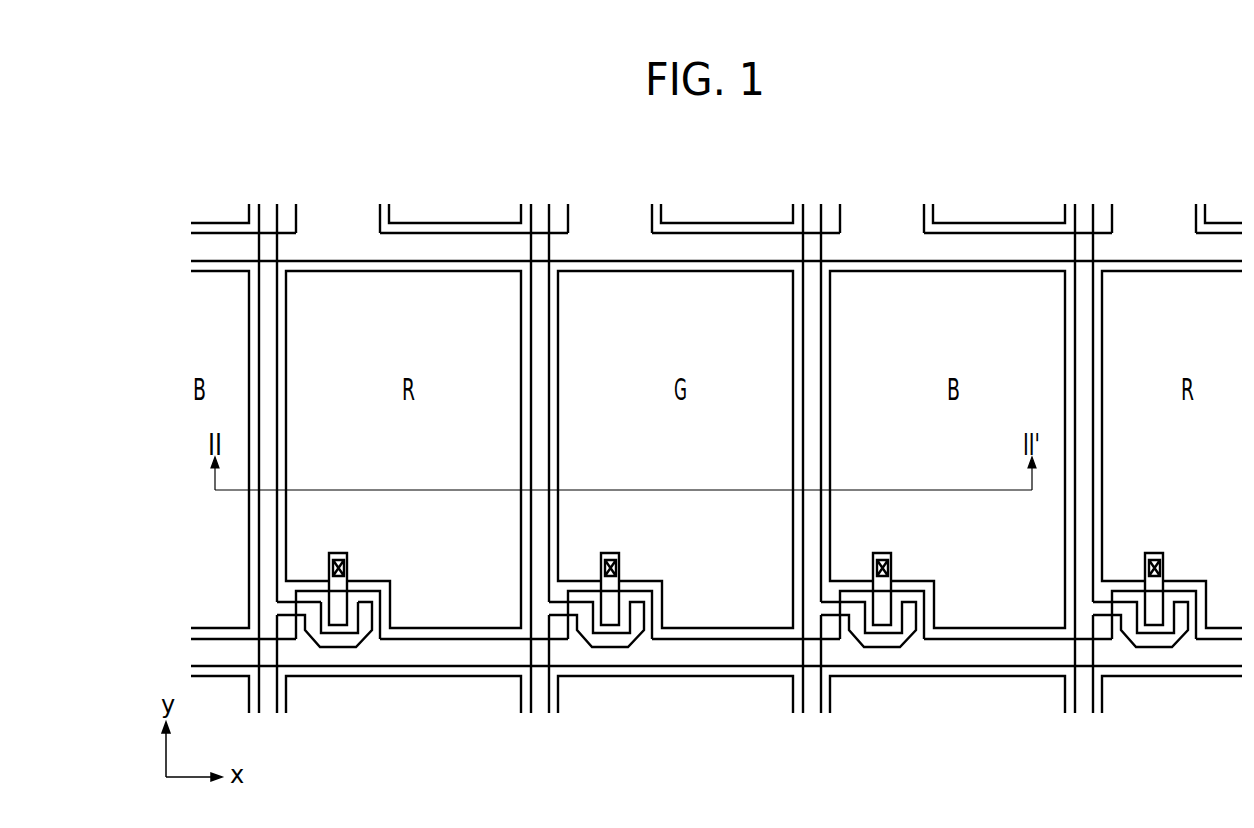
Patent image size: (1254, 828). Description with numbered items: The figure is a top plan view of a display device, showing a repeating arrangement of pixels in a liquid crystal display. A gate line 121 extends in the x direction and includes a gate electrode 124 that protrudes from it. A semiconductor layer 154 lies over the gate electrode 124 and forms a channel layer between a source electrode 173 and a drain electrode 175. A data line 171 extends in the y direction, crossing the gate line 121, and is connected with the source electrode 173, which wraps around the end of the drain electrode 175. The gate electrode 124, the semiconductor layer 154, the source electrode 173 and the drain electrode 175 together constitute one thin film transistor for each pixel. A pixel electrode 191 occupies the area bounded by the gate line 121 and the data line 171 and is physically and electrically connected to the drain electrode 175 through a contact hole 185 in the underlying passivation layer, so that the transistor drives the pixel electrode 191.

The gate line 121 is at (450, 639).
The gate electrode 124 is at (381, 616).
The semiconductor layer 154 is at (350, 603).
The data line 171 is at (259, 397).
The source electrode 173 is at (337, 648).
The drain electrode 175 is at (347, 575).
The contact hole 185 is at (345, 554).
The pixel electrode 191 is at (286, 338).